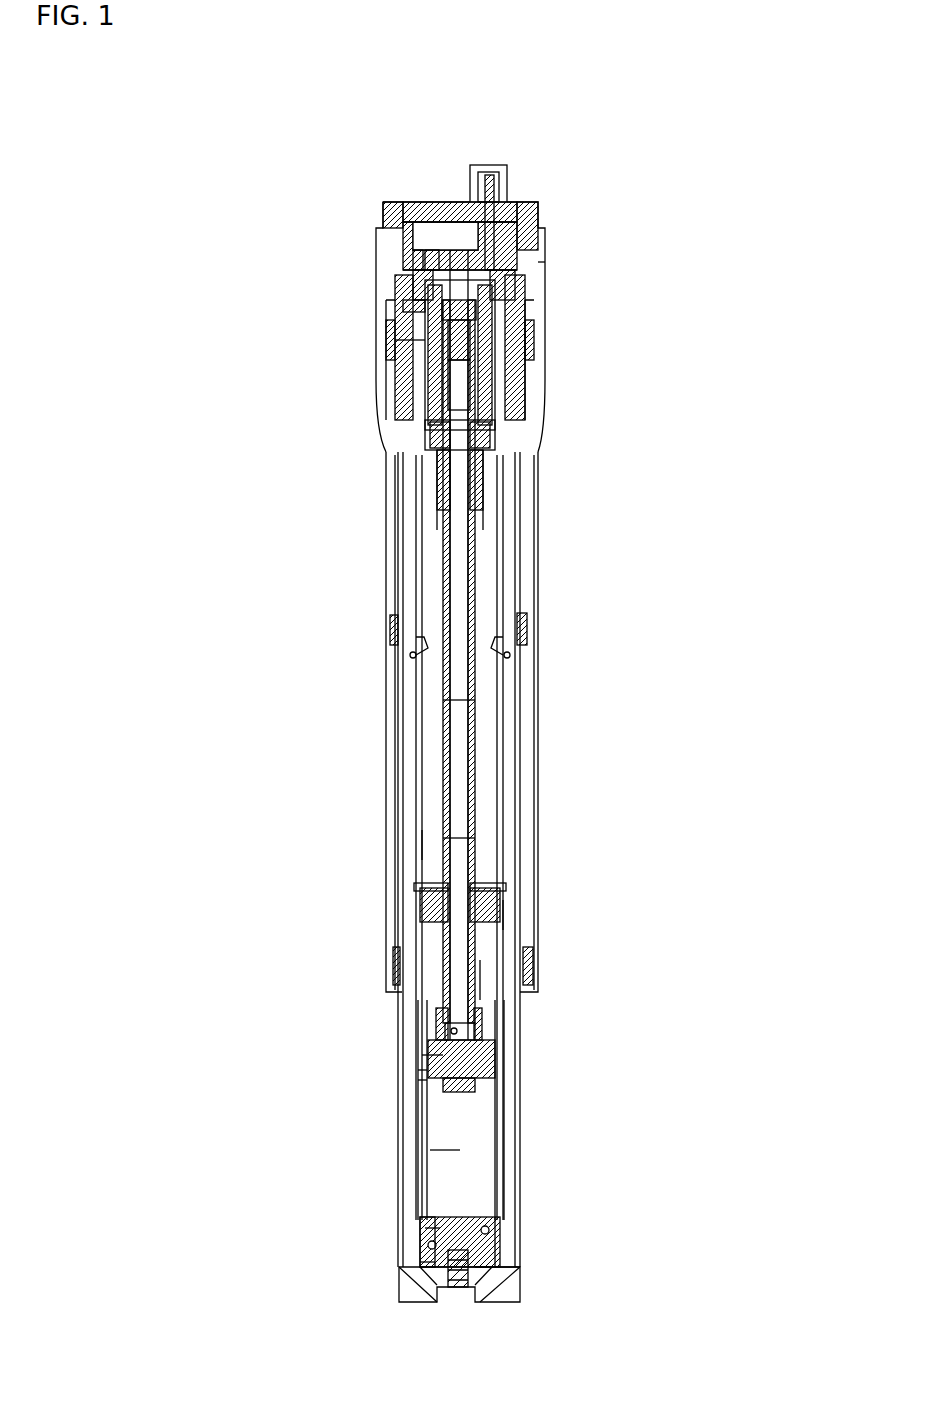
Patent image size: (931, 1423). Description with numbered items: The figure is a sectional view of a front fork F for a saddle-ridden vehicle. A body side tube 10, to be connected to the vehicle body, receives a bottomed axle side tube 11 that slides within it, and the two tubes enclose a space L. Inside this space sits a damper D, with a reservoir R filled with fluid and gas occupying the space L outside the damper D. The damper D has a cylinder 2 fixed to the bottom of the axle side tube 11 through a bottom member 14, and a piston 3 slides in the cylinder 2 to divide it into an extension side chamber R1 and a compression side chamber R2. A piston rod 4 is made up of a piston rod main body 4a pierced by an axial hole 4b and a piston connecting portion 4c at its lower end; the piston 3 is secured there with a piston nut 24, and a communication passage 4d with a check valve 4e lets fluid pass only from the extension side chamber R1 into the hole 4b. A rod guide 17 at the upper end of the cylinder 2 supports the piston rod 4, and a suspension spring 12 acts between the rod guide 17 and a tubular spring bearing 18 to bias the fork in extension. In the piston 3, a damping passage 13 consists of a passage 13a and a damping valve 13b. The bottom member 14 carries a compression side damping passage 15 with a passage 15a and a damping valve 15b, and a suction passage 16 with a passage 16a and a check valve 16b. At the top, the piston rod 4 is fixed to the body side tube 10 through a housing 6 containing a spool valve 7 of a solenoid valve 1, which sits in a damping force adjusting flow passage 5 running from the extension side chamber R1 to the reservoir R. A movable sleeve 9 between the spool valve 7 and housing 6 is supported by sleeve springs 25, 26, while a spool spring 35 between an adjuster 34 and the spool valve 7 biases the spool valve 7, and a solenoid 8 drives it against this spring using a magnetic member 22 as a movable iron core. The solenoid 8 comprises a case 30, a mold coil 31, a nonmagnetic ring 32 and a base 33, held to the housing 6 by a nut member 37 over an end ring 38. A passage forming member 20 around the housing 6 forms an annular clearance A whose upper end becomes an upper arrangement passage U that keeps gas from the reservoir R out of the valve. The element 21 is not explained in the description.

The solenoid valve 1 is at (547, 296).
The cylinder 2 is at (520, 1118).
The piston 3 is at (492, 1060).
The piston rod 4 is at (478, 686).
The piston rod main body 4a is at (477, 725).
The hole 4b is at (465, 836).
The piston connecting portion 4c is at (438, 1022).
The communication passage 4d is at (476, 1034).
The check valve 4e is at (428, 1055).
The damping force adjusting flow passage 5 is at (462, 762).
The housing 6 is at (492, 460).
The spool valve 7 is at (450, 358).
The solenoid 8 is at (427, 242).
The movable sleeve 9 is at (404, 378).
The body side tube 10 is at (390, 740).
The axle side tube 11 is at (522, 1160).
The suspension spring 12 is at (408, 656).
The damping passage 13 is at (425, 1100).
The passage 13a is at (424, 1080).
The damping valve 13b is at (426, 1074).
The bottom member 14 is at (500, 1240).
The compression side damping passage 15 is at (487, 1275).
The passage 15a is at (494, 1270).
The damping valve 15b is at (497, 1232).
The suction passage 16 is at (421, 1240).
The passage 16a is at (432, 1232).
The check valve 16b is at (426, 1262).
The rod guide 17 is at (422, 905).
The spring bearing 18 is at (515, 575).
The passage forming member 20 is at (400, 396).
The valve seat member 21 is at (512, 376).
The magnetic member 22 is at (522, 346).
The piston nut 24 is at (478, 1085).
The sleeve spring 25 is at (515, 425).
The sleeve spring 26 is at (500, 394).
The case 30 is at (520, 300).
The mold coil 31 is at (428, 292).
The nonmagnetic ring 32 is at (500, 336).
The base 33 is at (448, 250).
The adjuster 34 is at (463, 258).
The spool spring 35 is at (405, 312).
The nut member 37 is at (406, 232).
The end ring 38 is at (433, 245).
The annular clearance A is at (398, 340).
The upper arrangement passage U is at (402, 304).
The space L is at (418, 835).
The damper D is at (504, 912).
The front fork F is at (588, 266).
The reservoir R is at (412, 998).
The extension side chamber R1 is at (486, 1000).
The compression side chamber R2 is at (444, 1150).